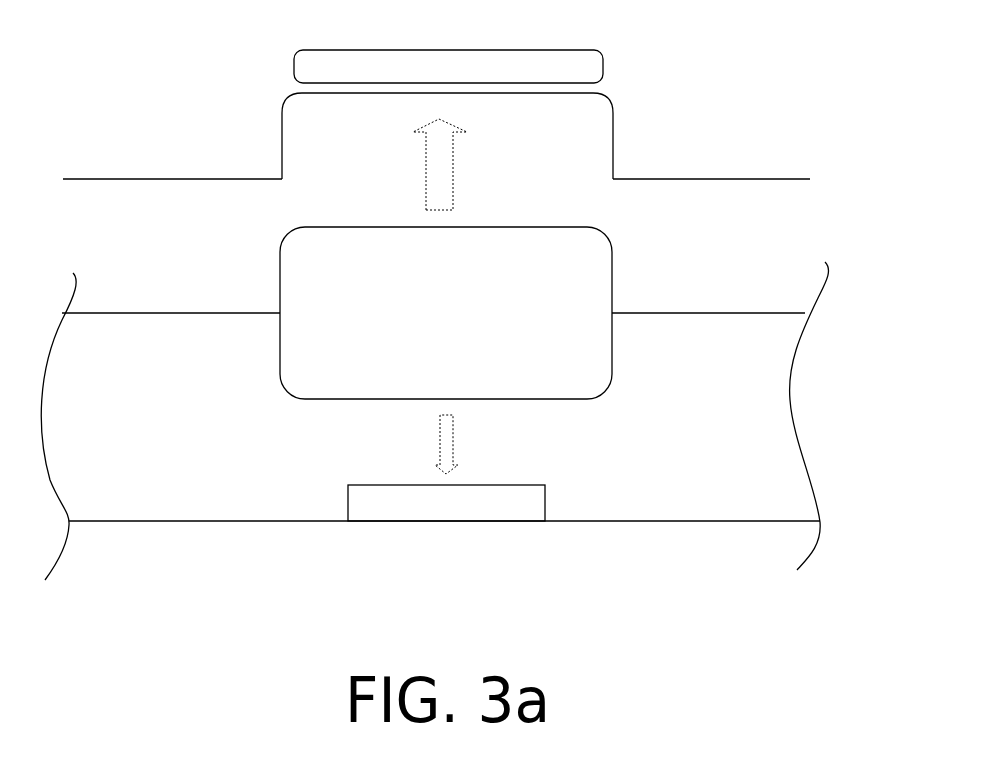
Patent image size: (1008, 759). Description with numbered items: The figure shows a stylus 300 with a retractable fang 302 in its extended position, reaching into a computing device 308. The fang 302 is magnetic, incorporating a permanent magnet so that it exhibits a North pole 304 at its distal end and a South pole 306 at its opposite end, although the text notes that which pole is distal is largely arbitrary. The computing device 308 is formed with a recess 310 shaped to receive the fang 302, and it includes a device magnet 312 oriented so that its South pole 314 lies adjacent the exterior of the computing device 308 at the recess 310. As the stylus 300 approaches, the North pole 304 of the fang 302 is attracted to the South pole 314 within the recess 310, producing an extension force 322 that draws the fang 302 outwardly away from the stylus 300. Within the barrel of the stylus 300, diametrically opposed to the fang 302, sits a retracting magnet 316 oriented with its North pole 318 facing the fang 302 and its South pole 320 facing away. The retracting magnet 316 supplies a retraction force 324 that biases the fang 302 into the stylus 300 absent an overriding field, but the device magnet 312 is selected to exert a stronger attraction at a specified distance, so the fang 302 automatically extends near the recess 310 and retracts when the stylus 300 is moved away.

The stylus 300 is at (798, 260).
The fang 302 is at (271, 275).
The North pole 304 is at (490, 236).
The South pole 306 is at (459, 357).
The computing device 308 is at (175, 138).
The recess 310 is at (390, 93).
The device magnet 312 is at (577, 50).
The South pole 314 is at (452, 72).
The retracting magnet 316 is at (527, 508).
The North pole 318 is at (452, 493).
The South pole 320 is at (442, 513).
The extension force 322 is at (443, 178).
The retraction force 324 is at (445, 432).